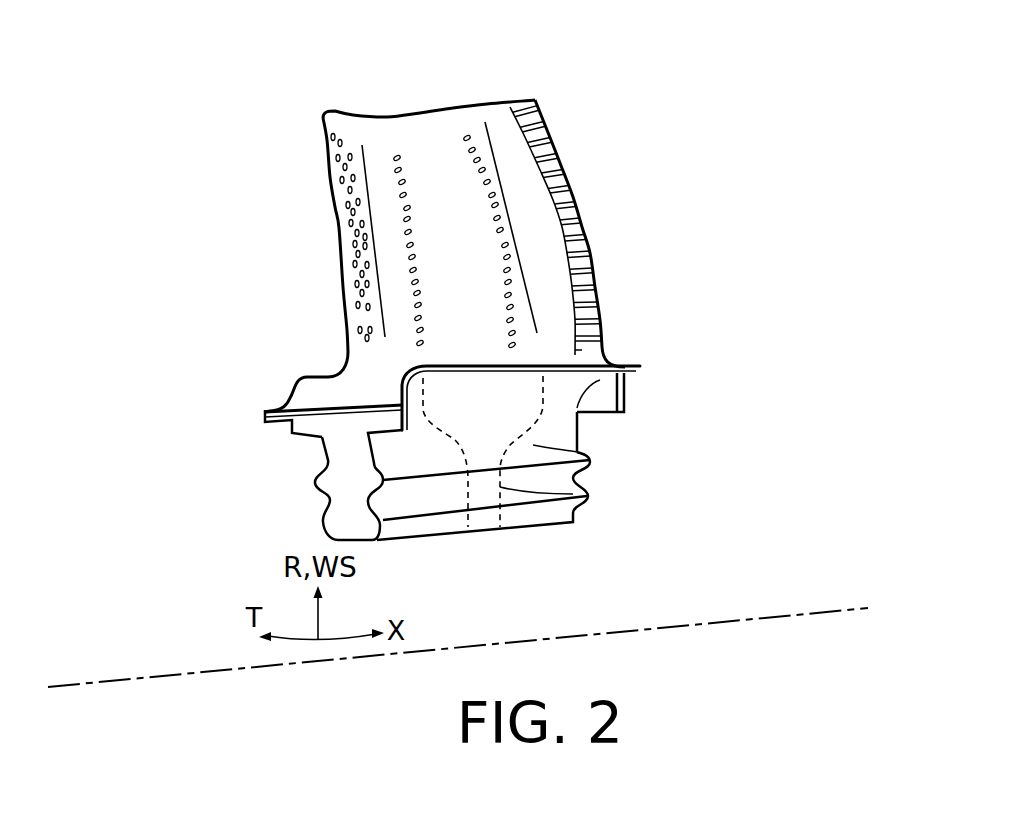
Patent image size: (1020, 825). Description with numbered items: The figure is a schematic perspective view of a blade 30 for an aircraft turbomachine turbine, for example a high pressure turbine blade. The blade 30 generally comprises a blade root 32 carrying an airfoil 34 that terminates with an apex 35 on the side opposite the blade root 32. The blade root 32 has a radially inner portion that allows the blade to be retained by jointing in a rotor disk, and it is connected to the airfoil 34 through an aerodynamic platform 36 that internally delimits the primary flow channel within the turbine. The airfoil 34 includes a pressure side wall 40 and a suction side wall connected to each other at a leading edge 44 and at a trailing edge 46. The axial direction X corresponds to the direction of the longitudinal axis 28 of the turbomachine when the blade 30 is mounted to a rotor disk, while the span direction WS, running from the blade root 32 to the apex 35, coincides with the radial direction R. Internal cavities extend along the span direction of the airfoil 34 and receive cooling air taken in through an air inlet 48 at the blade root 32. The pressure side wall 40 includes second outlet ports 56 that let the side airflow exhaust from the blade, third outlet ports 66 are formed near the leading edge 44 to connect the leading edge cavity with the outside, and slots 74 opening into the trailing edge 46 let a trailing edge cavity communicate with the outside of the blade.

The longitudinal axis 28 is at (177, 673).
The blade 30 is at (598, 101).
The blade root 32 is at (577, 452).
The airfoil 34 is at (523, 343).
The apex 35 is at (398, 114).
The aerodynamic platform 36 is at (641, 367).
The pressure side wall 40 is at (457, 242).
The leading edge 44 is at (328, 172).
The trailing edge 46 is at (562, 150).
The air inlet 48 is at (577, 488).
The second outlet ports 56 is at (497, 218).
The third outlet ports 66 is at (365, 317).
The slots 74 is at (591, 320).